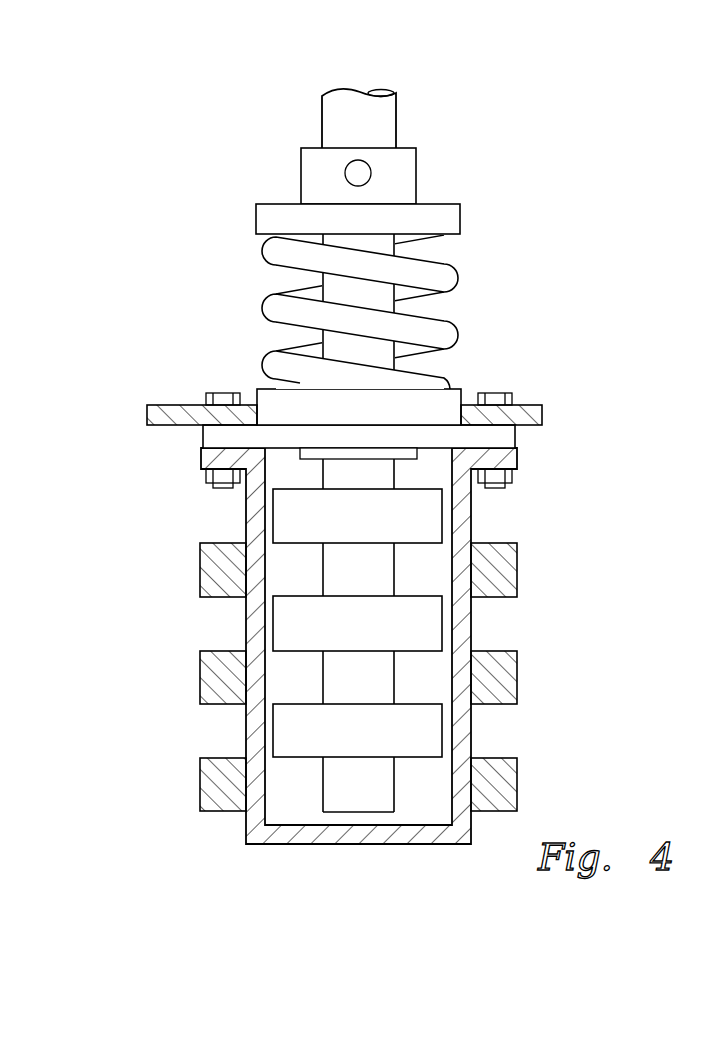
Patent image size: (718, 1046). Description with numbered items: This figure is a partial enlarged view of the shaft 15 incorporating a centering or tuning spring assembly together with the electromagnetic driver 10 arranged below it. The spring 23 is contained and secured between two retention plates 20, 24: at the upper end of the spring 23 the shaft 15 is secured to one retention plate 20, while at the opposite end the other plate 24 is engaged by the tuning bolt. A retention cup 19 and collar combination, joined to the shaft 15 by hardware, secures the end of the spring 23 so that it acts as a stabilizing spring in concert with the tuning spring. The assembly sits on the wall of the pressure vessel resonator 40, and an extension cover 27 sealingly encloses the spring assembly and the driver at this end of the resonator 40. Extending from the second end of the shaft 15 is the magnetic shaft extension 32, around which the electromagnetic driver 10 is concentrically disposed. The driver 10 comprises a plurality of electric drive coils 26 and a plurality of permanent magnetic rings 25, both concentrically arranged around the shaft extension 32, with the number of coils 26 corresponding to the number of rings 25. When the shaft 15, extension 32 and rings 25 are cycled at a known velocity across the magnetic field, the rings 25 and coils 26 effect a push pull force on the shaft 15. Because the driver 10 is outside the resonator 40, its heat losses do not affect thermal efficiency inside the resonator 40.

The electromagnetic driver 10 is at (612, 691).
The shaft 15 is at (386, 118).
The retention cup 19 is at (460, 222).
The retention plate 20 is at (418, 188).
The spring 23 is at (455, 343).
The retention plate 24 is at (447, 407).
The permanent magnetic rings 25 is at (380, 531).
The electric drive coils 26 is at (200, 562).
The extension cover 27 is at (473, 623).
The magnetic shaft extension 32 is at (353, 799).
The pressure vessel resonator 40 is at (190, 405).